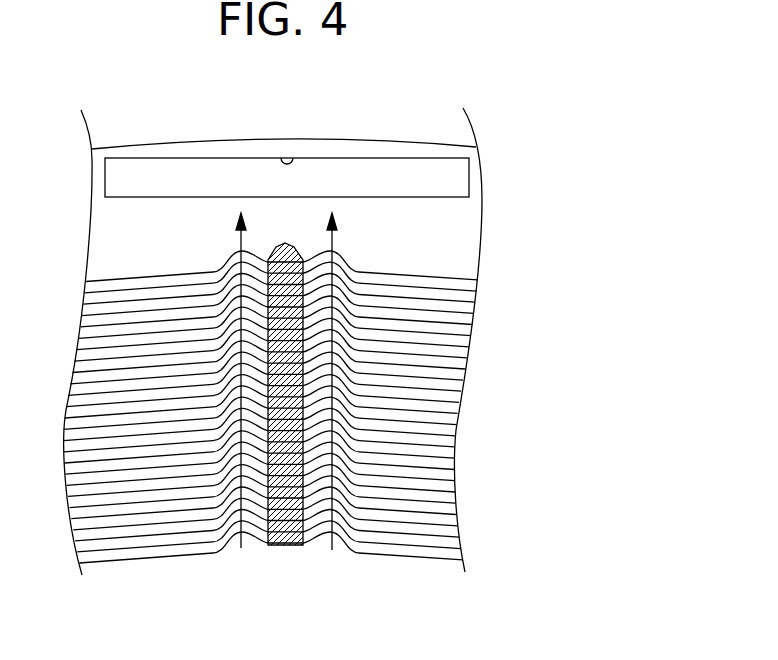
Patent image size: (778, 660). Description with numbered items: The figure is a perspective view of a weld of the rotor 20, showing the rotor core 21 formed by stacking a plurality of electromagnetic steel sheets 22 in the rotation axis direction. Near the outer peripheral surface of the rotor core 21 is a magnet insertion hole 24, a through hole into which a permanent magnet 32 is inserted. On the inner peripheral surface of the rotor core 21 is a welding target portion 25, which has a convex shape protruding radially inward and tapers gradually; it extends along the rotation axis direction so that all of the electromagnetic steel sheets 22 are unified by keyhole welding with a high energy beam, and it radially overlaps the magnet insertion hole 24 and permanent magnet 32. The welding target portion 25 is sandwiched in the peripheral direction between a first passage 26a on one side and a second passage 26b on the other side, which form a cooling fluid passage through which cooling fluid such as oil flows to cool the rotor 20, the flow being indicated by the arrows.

The rotor 20 is at (402, 131).
The rotor core 21 is at (358, 131).
The electromagnetic steel sheets 22 is at (114, 522).
The magnet insertion holes 24 is at (289, 163).
The welding target portion 25 is at (288, 550).
The first passage 26a is at (345, 538).
The second passage 26b is at (229, 536).
The permanent magnet 32 is at (220, 180).